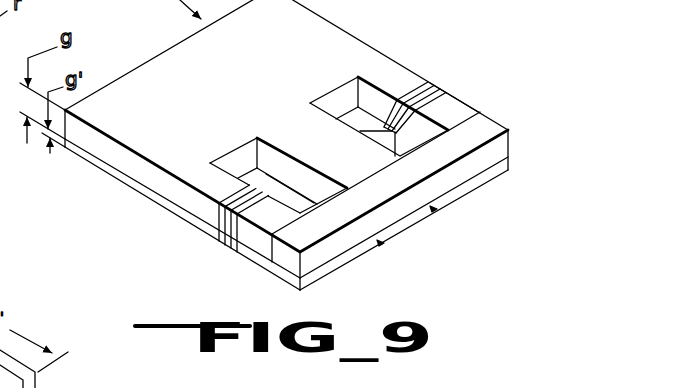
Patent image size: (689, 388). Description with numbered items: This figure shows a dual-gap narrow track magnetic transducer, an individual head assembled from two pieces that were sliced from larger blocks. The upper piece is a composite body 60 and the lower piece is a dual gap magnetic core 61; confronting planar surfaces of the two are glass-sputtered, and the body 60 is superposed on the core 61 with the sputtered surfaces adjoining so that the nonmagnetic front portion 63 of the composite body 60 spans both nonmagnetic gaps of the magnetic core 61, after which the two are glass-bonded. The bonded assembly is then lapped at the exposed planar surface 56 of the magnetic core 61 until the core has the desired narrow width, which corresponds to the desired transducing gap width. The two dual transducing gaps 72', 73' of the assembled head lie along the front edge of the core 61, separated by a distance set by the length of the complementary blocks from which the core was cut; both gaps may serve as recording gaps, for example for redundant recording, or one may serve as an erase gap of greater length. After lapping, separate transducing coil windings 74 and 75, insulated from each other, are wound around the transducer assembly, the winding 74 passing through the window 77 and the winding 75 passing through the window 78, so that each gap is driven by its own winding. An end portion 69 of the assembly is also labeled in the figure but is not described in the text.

The exposed planar surface 56 is at (145, 200).
The composite body 60 is at (509, 141).
The dual gap magnetic core 61 is at (453, 198).
The nonmagnetic front portion 63 is at (407, 190).
The end portion of bar 69 is at (469, 114).
The transducing gap 72' is at (457, 229).
The transducing gap 73' is at (403, 259).
The transducing coil winding 74 is at (412, 88).
The transducing coil winding 75 is at (217, 226).
The window 77 is at (337, 99).
The window 78 is at (243, 155).